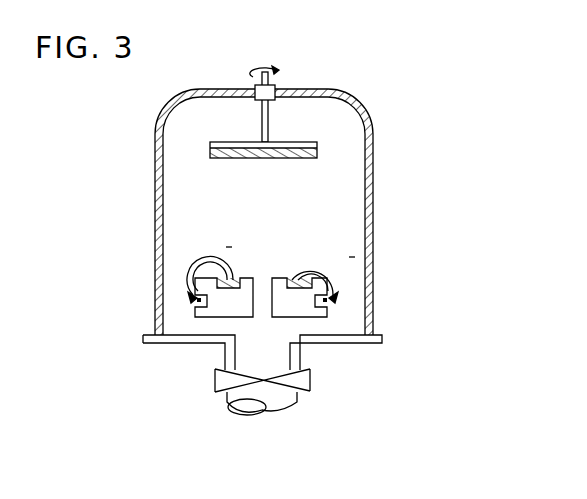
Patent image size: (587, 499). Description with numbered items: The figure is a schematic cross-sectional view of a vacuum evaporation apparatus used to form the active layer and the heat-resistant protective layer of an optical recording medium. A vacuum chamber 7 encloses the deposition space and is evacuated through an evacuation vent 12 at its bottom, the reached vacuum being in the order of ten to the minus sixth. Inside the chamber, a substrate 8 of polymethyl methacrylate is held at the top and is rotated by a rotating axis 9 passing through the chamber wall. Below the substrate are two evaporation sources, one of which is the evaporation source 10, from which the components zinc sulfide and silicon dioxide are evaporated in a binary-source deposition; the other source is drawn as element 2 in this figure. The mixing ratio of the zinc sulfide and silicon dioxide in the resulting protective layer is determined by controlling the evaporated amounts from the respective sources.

The evaporation source (crucible) for first material 2 is at (203, 287).
The vacuum chamber 7 is at (373, 207).
The substrate 8 is at (317, 150).
The rotating axis 9 is at (273, 66).
The evaporation source 10 is at (317, 290).
The evacuation vent 12 is at (250, 416).